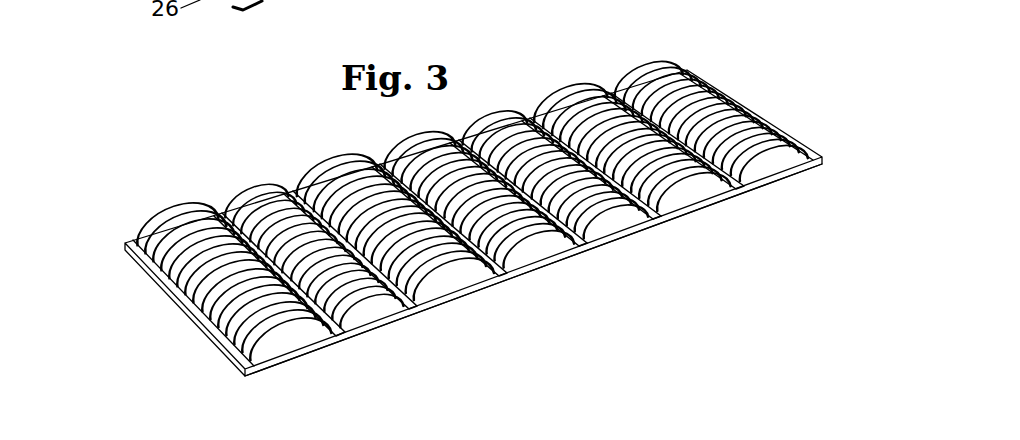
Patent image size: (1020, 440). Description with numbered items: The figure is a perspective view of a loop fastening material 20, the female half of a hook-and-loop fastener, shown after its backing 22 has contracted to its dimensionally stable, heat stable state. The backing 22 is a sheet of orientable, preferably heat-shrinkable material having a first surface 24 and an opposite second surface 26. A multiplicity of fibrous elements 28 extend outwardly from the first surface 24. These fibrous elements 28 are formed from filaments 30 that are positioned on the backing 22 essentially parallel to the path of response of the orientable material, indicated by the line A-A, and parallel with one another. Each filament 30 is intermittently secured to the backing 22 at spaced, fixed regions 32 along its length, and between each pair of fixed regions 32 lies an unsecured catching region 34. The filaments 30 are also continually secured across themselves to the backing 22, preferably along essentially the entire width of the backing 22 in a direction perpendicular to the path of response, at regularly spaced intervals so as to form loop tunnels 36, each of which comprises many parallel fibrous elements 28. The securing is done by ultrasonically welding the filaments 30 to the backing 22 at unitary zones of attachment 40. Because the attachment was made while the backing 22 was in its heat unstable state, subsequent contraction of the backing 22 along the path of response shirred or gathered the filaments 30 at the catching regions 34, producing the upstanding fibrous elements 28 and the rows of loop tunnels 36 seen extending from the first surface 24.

The loop fastening material 20 is at (132, 178).
The backing 22 is at (767, 180).
The first surface 24 is at (808, 155).
The second surface 26 is at (803, 173).
The fibrous elements 28 is at (342, 168).
The filaments 30 is at (221, 214).
The fixed regions 32 is at (405, 305).
The catching region 34 is at (465, 272).
The loop tunnels 36 is at (638, 82).
The unitary zones of attachment 40 is at (648, 207).